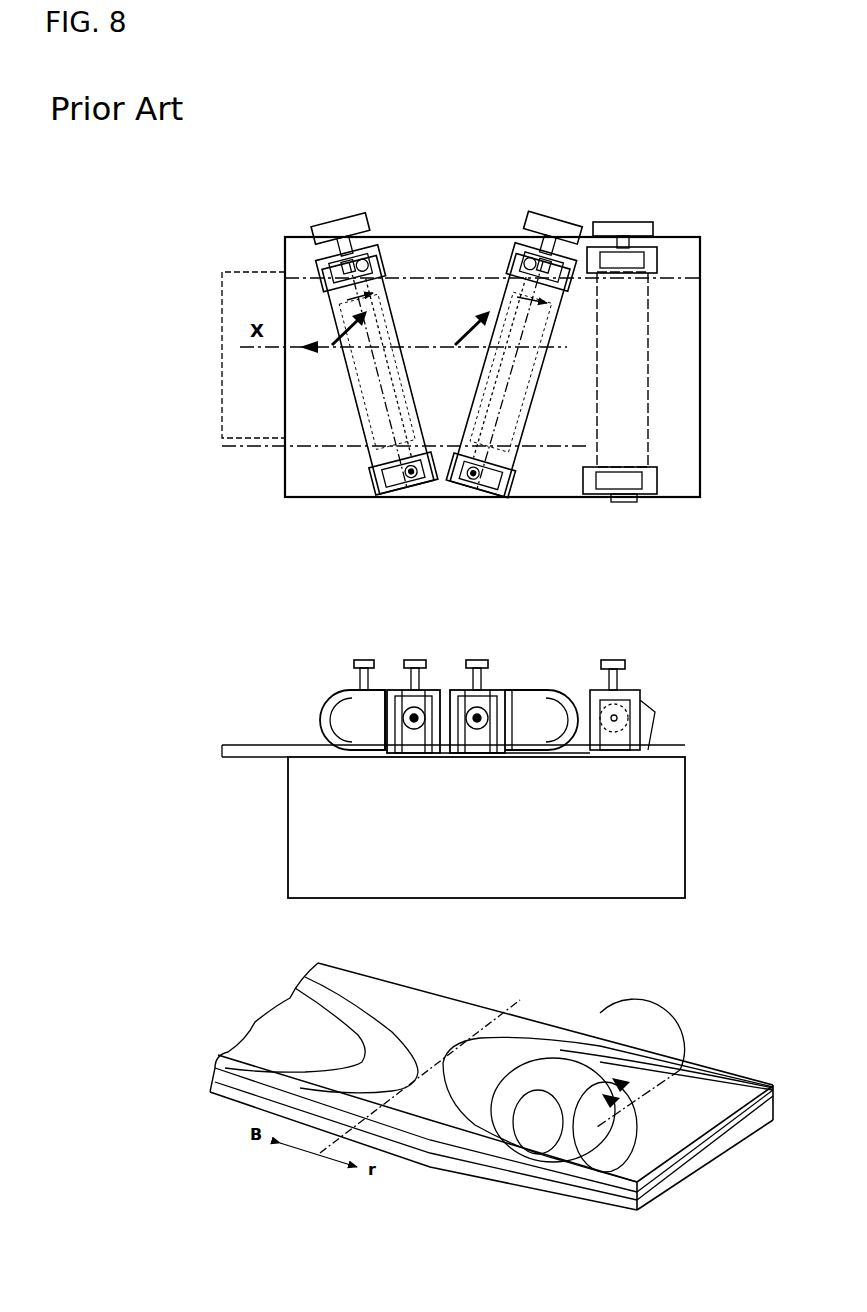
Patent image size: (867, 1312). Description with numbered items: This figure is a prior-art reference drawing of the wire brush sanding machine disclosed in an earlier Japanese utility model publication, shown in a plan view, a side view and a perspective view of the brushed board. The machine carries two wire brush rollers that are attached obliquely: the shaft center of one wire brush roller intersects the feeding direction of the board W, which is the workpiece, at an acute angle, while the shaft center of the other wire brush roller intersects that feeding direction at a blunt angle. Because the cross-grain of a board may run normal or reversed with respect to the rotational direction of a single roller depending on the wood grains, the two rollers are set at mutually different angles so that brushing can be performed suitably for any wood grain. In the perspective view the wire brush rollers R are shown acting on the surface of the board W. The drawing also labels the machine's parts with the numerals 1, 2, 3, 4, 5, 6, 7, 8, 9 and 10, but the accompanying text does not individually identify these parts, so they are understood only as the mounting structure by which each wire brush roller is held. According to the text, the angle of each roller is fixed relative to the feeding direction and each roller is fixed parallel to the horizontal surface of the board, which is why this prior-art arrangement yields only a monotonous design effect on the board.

The base table 1 is at (688, 283).
The first roller unit 2 is at (338, 466).
The bearing block 3 is at (427, 495).
The roller 4 is at (378, 410).
The bearing cap bolt 5 is at (385, 245).
The second roller unit 6 is at (511, 466).
The bearing block 7 is at (480, 490).
The roller 8 is at (511, 430).
The bearing cap bolt 9 is at (521, 255).
The clamp stopper 10 is at (650, 372).
The board (workpiece) W is at (252, 272).
The wire brush roller R is at (680, 1022).